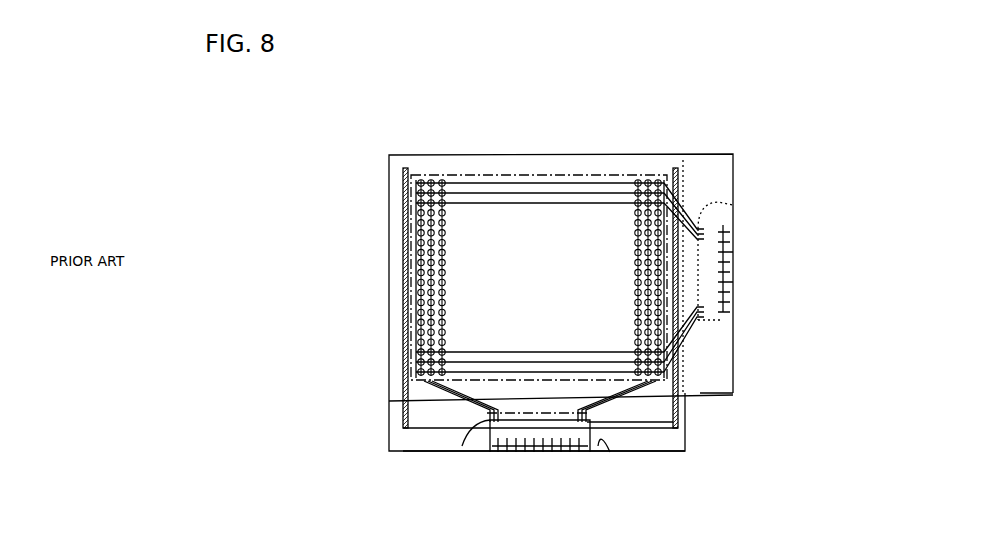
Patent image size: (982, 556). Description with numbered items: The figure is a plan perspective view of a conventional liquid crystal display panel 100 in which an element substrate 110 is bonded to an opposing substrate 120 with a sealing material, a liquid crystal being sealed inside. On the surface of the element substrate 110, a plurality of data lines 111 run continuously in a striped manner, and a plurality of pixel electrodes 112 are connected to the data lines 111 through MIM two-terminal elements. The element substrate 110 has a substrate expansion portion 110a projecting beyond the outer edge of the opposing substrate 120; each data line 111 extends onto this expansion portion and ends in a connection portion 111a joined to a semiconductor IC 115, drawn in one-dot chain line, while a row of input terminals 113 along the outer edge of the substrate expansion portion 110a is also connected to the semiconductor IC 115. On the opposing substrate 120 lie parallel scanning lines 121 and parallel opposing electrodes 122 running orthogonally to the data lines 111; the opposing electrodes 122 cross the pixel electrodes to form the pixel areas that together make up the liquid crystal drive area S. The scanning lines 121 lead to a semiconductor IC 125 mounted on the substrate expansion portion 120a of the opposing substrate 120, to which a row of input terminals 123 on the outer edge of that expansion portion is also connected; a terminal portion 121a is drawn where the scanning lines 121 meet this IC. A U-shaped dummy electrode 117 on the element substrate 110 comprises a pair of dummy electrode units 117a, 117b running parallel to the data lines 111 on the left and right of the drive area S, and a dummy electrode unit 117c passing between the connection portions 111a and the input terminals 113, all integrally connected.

The liquid crystal display panel 100 is at (378, 90).
The element substrate 110 is at (385, 419).
The substrate expansion portion 110a is at (636, 452).
The data line 111 is at (420, 278).
The connection portion 111a is at (472, 452).
The pixel electrode 112 is at (420, 222).
The input terminal 113 is at (540, 455).
The semiconductor IC 115 is at (603, 455).
The dummy electrode 117 is at (692, 413).
The dummy electrode unit 117a is at (403, 328).
The dummy electrode unit 117b is at (698, 295).
The dummy electrode unit 117c is at (502, 452).
The opposing substrate 120 is at (610, 153).
The substrate expansion portion 120a is at (713, 157).
The scanning line 121 is at (690, 333).
The wiring terminal portion 121a is at (698, 312).
The opposing electrode 122 is at (513, 175).
The input terminal 123 is at (733, 258).
The semiconductor IC 125 is at (735, 205).
The liquid crystal drive area S is at (466, 176).